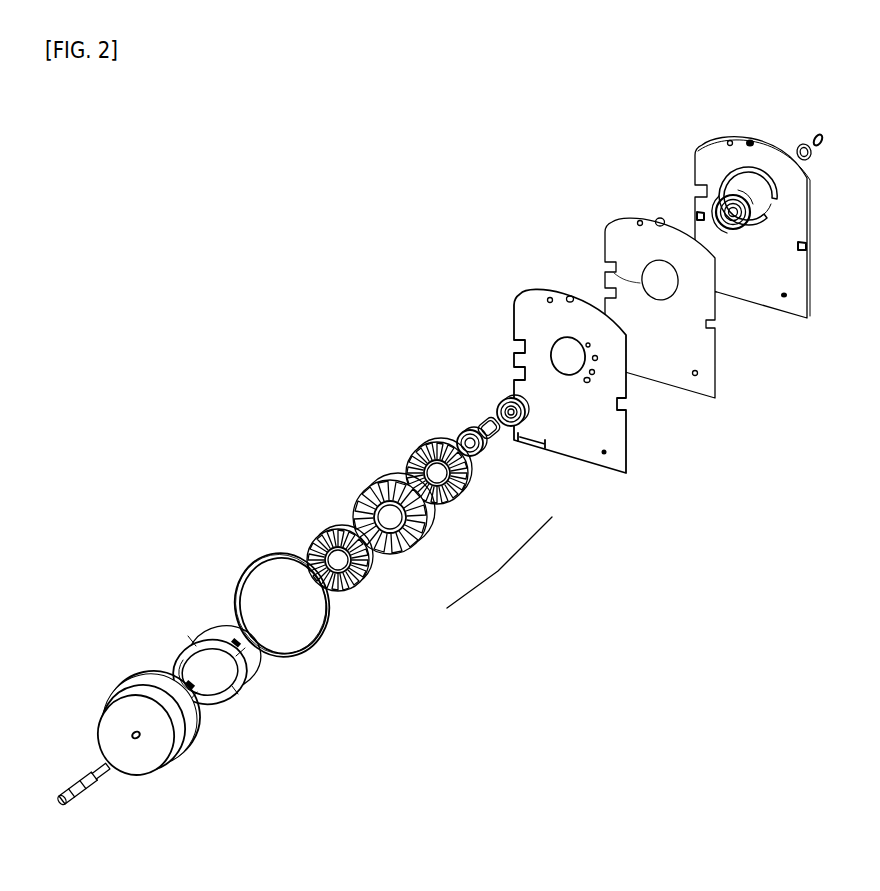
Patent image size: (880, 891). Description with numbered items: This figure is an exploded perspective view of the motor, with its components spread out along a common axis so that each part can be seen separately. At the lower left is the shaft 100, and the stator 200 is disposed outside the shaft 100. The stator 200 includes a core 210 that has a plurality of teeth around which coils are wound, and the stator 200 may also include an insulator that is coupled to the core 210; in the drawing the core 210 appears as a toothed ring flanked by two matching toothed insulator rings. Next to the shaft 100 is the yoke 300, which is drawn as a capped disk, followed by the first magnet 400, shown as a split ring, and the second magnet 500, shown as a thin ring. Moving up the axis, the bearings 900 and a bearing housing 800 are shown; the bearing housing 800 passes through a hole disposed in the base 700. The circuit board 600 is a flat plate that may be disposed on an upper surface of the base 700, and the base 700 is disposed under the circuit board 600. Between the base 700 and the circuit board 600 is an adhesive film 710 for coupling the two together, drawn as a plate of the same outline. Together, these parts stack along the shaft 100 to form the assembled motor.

The shaft 100 is at (96, 794).
The stator 200 is at (499, 562).
The core 210 is at (427, 525).
The yoke 300 is at (208, 755).
The first magnet 400 is at (265, 688).
The second magnet 500 is at (340, 636).
The circuit board 600 is at (507, 299).
The base 700 is at (702, 136).
The adhesive film 710 is at (614, 273).
The bearing housing 800 is at (723, 196).
The bearings 900 is at (503, 396).